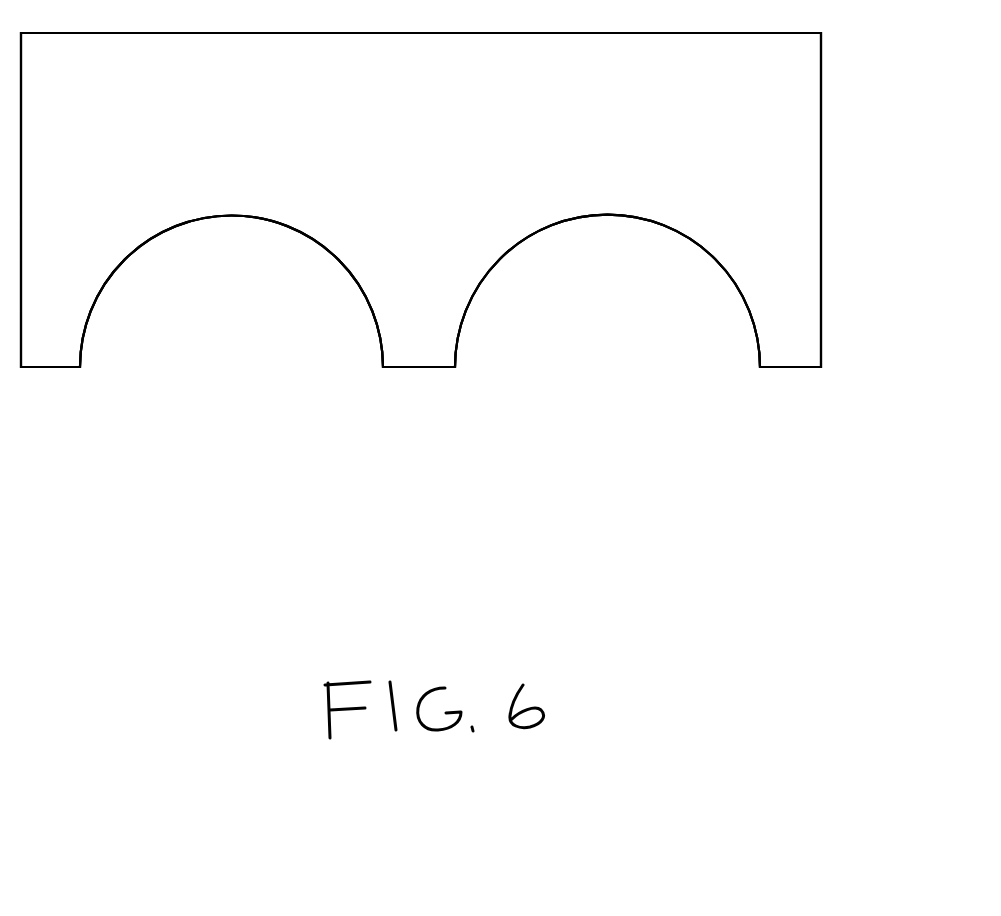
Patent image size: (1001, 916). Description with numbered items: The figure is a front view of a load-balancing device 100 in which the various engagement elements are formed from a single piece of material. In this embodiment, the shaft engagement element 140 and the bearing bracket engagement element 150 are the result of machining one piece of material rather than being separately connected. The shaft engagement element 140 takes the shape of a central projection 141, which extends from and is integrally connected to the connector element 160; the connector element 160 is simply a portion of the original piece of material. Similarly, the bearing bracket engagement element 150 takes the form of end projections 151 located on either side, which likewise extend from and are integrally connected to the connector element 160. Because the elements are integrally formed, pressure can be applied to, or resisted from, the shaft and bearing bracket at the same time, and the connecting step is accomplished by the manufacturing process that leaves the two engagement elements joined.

The load-balancing device 100 is at (686, 542).
The connector element 160 is at (443, 116).
The end projections 151 is at (57, 335).
The central projection 141 is at (430, 345).
The bearing bracket engagement element 150 is at (51, 442).
The shaft engagement element 140 is at (429, 428).